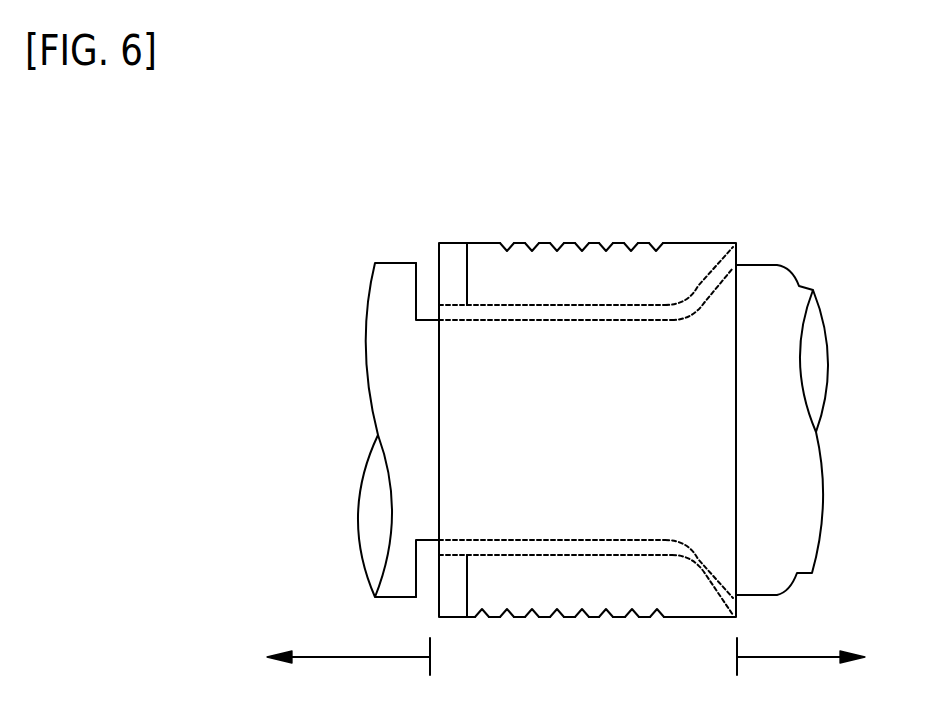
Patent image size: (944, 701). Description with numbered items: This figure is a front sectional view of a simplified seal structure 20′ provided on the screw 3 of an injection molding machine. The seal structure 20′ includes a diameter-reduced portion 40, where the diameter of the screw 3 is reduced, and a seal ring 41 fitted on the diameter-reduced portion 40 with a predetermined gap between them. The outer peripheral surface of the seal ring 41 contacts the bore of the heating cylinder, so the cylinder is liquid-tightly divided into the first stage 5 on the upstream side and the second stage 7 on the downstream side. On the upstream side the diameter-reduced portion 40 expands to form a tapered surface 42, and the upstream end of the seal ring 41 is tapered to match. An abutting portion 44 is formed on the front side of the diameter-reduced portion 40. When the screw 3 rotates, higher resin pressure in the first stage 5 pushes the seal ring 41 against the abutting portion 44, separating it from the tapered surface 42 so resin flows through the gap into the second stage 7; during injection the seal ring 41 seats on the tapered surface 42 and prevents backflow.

The seal structure 20′ is at (663, 195).
The diameter-reduced portion 40 is at (512, 320).
The seal ring 41 is at (568, 243).
The tapered surface 42 is at (697, 300).
The abutting portion 44 is at (417, 278).
The screw 3 is at (364, 340).
The second stage 7 is at (334, 656).
The first stage 5 is at (820, 656).